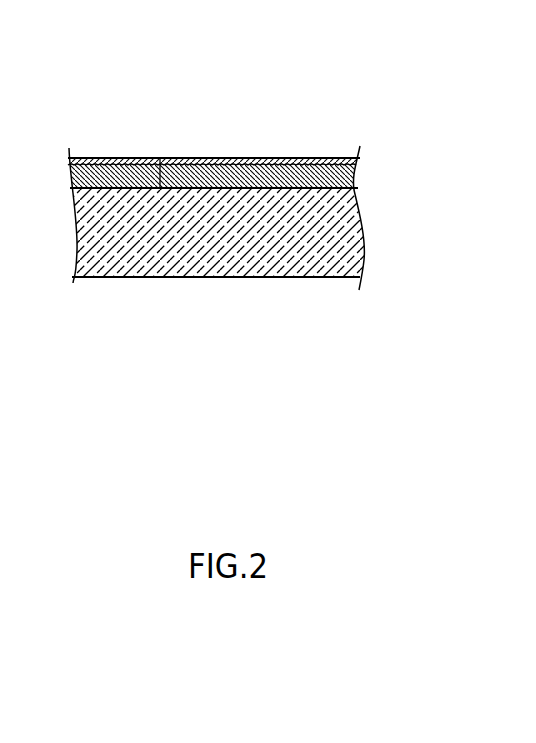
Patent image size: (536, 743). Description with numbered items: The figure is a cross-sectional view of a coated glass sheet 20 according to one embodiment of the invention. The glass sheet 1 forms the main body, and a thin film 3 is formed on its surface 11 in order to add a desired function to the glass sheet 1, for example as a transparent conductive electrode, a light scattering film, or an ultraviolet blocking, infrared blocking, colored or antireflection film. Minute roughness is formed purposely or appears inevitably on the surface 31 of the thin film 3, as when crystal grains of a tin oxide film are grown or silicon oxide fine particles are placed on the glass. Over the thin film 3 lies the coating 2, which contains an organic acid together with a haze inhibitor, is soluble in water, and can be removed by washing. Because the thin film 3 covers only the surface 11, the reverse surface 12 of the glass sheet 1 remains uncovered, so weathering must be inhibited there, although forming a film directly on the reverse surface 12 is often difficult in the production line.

The coated glass sheet 20 is at (124, 138).
The glass sheet 1 is at (340, 232).
The coating 2 is at (332, 160).
The thin film 3 is at (340, 175).
The surface 11 is at (160, 158).
The surface of the thin film 31 is at (240, 158).
The reverse surface 12 is at (253, 278).